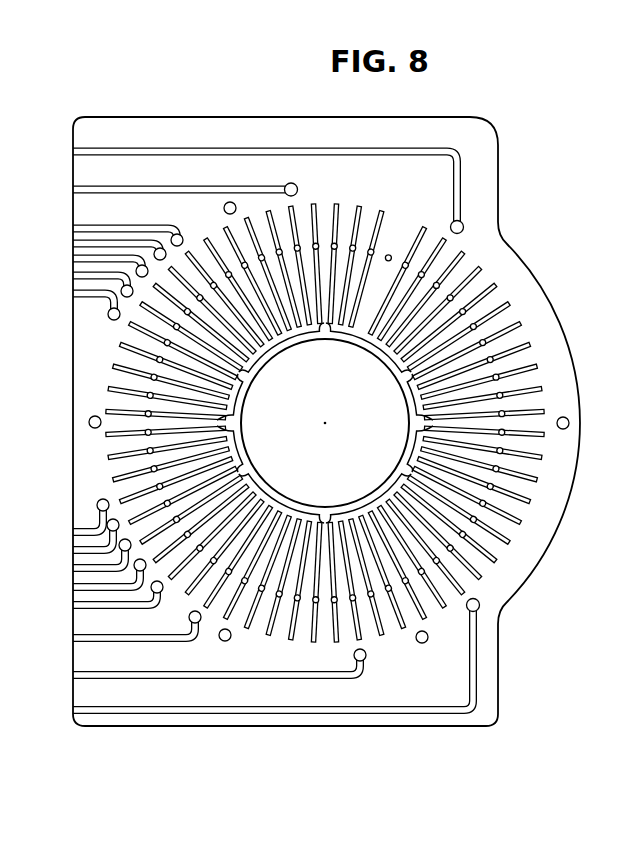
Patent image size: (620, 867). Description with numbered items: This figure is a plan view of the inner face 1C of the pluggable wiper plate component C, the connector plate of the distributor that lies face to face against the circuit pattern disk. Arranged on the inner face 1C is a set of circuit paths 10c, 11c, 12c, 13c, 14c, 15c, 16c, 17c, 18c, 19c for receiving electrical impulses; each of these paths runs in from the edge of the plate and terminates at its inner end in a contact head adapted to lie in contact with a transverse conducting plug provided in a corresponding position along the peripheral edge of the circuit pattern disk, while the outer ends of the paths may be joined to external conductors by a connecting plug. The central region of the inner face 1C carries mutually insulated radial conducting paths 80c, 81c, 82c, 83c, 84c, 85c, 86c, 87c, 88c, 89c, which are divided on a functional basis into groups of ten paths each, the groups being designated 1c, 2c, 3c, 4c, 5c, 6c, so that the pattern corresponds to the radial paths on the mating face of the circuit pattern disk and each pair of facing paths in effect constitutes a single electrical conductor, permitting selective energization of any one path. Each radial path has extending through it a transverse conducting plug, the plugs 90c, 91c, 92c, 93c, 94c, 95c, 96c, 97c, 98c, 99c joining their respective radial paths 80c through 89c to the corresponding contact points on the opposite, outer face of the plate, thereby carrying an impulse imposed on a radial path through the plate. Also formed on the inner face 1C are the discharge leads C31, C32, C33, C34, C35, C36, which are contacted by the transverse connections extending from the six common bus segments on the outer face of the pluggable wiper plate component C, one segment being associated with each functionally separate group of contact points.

The pluggable wiper plate component C is at (467, 117).
The inner face 1C is at (492, 158).
The group 1c is at (404, 377).
The group 2c is at (325, 333).
The group 3c is at (249, 378).
The group 4c is at (249, 468).
The group 5c is at (325, 514).
The group 6c is at (402, 468).
The circuit path 10c is at (78, 237).
The circuit path 11c is at (78, 254).
The circuit path 12c is at (78, 271).
The circuit path 13c is at (80, 291).
The circuit path 14c is at (80, 310).
The circuit path 15c is at (78, 532).
The circuit path 16c is at (78, 550).
The circuit path 17c is at (78, 568).
The circuit path 18c is at (78, 587).
The circuit path 19c is at (78, 605).
The radial conducting path 80c is at (547, 410).
The radial conducting path 81c is at (545, 388).
The radial conducting path 82c is at (540, 365).
The radial conducting path 83c is at (533, 343).
The radial conducting path 84c is at (523, 322).
The radial conducting path 85c is at (512, 302).
The radial conducting path 86c is at (498, 283).
The radial conducting path 87c is at (483, 266).
The radial conducting path 88c is at (466, 251).
The radial conducting path 89c is at (447, 238).
The transverse conducting plug 90c is at (505, 412).
The transverse conducting plug 91c is at (503, 394).
The transverse conducting plug 92c is at (499, 376).
The transverse conducting plug 93c is at (493, 358).
The transverse conducting plug 94c is at (485, 341).
The transverse conducting plug 95c is at (476, 325).
The transverse conducting plug 96c is at (465, 310).
The transverse conducting plug 97c is at (453, 296).
The transverse conducting plug 98c is at (440, 283).
The transverse conducting plug 99c is at (424, 272).
The discharge lead C31 is at (237, 150).
The discharge lead C32 is at (152, 190).
The discharge lead C33 is at (97, 222).
The discharge lead C34 is at (80, 639).
The discharge lead C35 is at (92, 677).
The discharge lead C36 is at (107, 707).